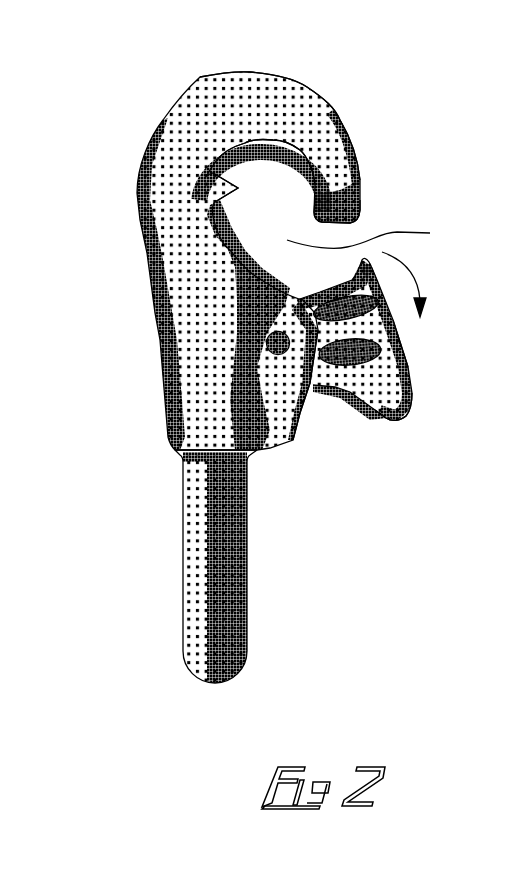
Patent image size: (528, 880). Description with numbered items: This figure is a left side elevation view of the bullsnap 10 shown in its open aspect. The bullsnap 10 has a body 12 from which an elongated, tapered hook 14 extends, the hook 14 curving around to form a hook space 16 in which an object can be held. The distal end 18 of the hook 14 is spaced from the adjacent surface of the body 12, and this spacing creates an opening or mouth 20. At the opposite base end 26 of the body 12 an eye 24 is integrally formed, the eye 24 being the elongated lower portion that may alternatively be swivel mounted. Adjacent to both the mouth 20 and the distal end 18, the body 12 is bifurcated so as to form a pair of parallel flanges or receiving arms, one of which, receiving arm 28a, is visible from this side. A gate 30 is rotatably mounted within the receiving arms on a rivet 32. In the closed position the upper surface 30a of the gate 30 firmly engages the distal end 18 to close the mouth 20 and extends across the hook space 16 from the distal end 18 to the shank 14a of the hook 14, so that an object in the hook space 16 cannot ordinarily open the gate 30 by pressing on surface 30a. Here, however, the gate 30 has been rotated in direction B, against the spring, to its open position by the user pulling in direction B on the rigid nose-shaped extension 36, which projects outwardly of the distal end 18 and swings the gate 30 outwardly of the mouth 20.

The bullsnap 10 is at (200, 77).
The body 12 is at (207, 293).
The hook 14 is at (298, 95).
The shank 14a is at (213, 173).
The hook space 16 is at (273, 162).
The distal end 18 is at (350, 223).
The mouth 20 is at (378, 235).
The eye 24 is at (200, 570).
The base end 26 is at (195, 413).
The receiving arm 28a is at (287, 407).
The gate 30 is at (395, 388).
The upper surface 30a is at (403, 337).
The rivet 32 is at (278, 354).
The extension 36 is at (400, 413).
The direction B is at (409, 272).